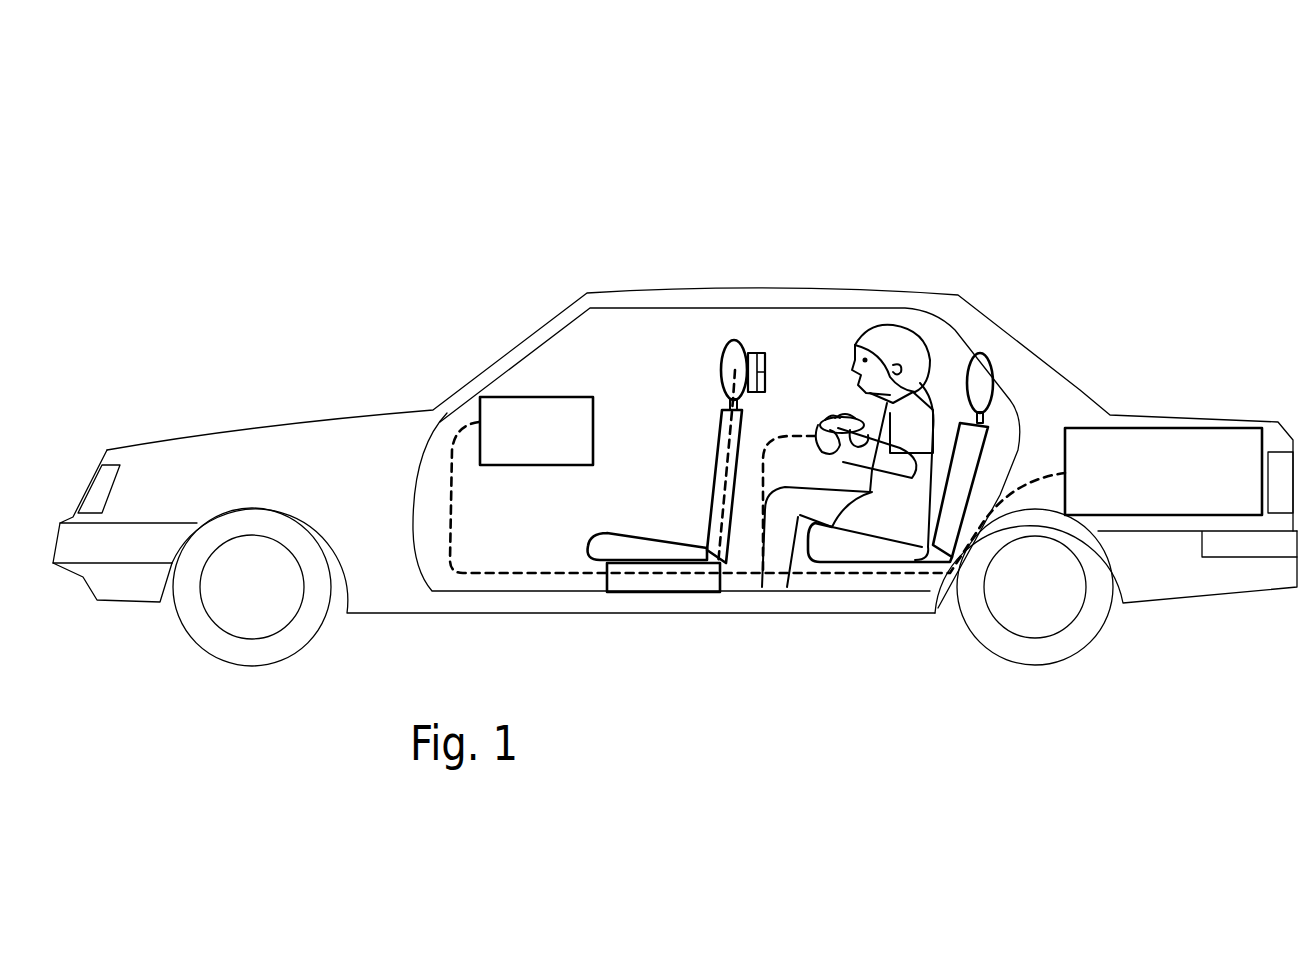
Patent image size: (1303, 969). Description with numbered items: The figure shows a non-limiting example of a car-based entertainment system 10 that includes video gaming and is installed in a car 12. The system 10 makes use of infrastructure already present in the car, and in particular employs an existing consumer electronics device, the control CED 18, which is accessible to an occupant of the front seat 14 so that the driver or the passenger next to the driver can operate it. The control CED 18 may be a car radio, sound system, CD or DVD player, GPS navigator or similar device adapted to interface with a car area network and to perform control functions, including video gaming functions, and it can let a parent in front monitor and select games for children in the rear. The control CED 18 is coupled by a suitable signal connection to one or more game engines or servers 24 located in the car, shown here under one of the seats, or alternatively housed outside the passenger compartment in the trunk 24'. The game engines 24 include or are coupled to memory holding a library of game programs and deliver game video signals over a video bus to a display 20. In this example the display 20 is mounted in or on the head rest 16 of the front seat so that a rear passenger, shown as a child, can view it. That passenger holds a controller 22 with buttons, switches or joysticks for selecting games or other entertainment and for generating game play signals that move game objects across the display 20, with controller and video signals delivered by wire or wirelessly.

The car-based entertainment system 10 is at (1100, 298).
The car 12 is at (333, 496).
The front seat 14 is at (602, 543).
The head rest 16 is at (723, 373).
The control CED 18 is at (542, 397).
The display 20 is at (765, 357).
The controller 22 is at (815, 422).
The game engine 24 is at (643, 674).
The trunk 24' is at (1177, 438).